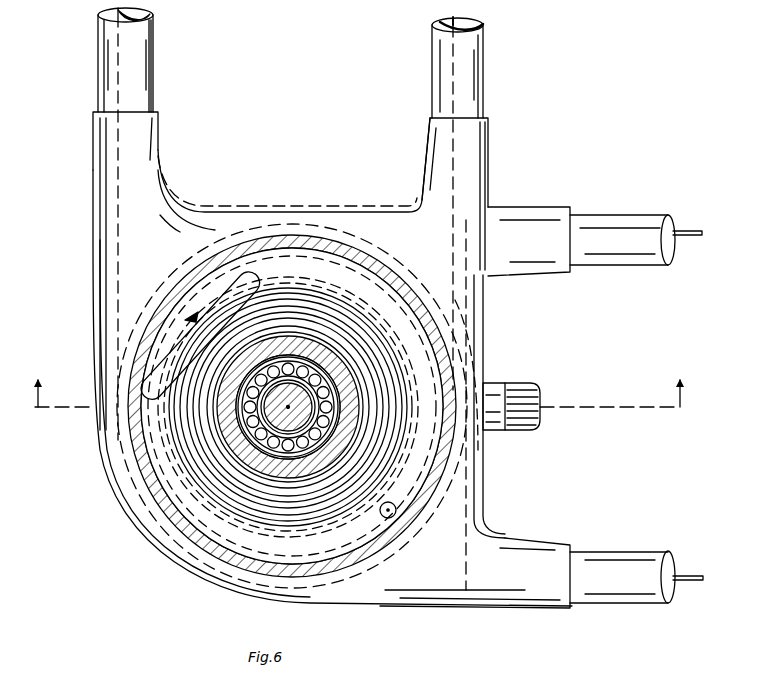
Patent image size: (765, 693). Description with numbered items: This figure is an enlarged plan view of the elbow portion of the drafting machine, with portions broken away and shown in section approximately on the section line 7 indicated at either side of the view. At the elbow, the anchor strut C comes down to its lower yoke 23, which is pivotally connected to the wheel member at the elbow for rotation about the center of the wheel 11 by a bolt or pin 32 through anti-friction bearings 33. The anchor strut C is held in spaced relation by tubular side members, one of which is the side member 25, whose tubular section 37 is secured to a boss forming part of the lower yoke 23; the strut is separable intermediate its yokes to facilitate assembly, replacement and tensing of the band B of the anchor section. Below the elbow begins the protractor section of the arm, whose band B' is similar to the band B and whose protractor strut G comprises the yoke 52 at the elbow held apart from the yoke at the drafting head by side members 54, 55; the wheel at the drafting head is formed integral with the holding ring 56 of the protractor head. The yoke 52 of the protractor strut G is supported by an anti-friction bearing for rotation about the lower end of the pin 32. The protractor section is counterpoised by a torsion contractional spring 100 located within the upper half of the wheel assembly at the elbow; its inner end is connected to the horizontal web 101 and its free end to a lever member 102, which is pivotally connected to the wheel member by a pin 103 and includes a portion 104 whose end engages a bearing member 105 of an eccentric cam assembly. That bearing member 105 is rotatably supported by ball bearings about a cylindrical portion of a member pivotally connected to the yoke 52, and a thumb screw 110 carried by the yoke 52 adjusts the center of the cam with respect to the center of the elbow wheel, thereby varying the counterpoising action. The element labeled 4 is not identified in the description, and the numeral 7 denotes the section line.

The inlet tube 4 is at (96, 30).
The holding ring 56 is at (150, 33).
The anchor strut C is at (158, 70).
The tubular side member 25 is at (478, 72).
The tubular section 37 is at (440, 96).
The band B is at (422, 75).
The lower yoke 23 is at (185, 232).
The wheel 11 is at (298, 240).
The protractor strut G is at (630, 226).
The side member 54 is at (655, 265).
The band B' is at (693, 248).
The bearing member 105 is at (318, 305).
The anti-friction bearings 33 is at (320, 378).
The bolt or pin 32 is at (262, 418).
The lever member 102 is at (175, 318).
The thumb screw 110 is at (512, 390).
The section line 7 is at (357, 378).
The horizontal web 101 is at (165, 480).
The torsion contractional spring 100 is at (205, 500).
The portion of lever 104 is at (305, 520).
The pin 103 is at (398, 516).
The yoke 52 is at (462, 600).
The side member 55 is at (645, 560).